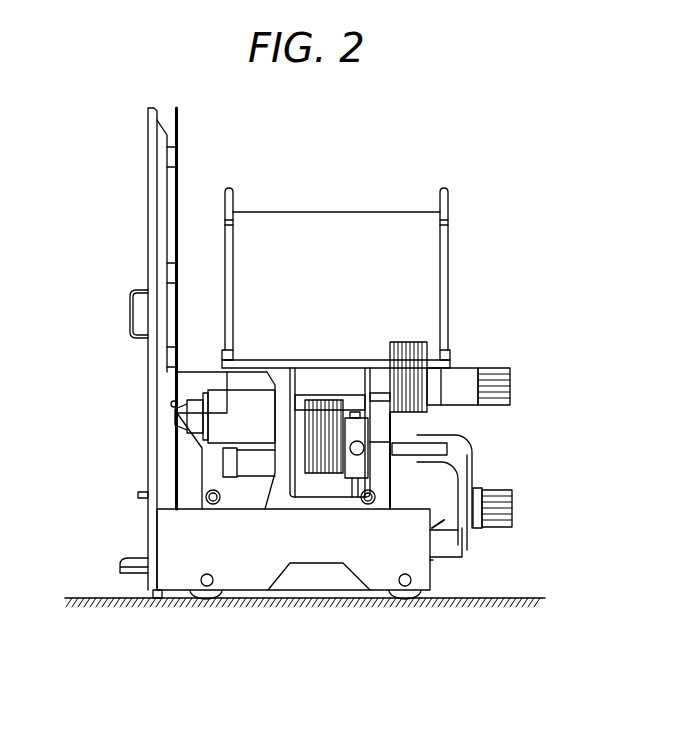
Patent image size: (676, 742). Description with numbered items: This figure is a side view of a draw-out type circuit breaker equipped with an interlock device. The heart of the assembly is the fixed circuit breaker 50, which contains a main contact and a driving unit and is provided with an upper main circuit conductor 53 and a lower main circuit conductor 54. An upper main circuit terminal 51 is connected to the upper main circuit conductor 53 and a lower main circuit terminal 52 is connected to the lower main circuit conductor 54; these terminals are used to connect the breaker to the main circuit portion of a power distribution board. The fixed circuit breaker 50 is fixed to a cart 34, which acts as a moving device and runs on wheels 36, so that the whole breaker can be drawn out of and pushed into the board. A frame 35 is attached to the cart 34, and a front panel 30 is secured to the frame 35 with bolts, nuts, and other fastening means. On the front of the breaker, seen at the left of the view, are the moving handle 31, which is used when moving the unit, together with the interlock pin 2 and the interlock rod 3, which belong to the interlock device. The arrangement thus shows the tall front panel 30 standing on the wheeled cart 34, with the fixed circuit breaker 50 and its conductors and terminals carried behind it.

The interlock pin 2 is at (138, 495).
The interlock rod 3 is at (153, 600).
The front panel 30 is at (148, 128).
The moving handle 31 is at (136, 292).
The cart 34 is at (262, 575).
The frame 35 is at (162, 445).
The wheels 36 is at (207, 600).
The fixed circuit breaker 50 is at (348, 222).
The upper main circuit terminal 51 is at (490, 378).
The lower main circuit terminal 52 is at (488, 495).
The upper main circuit conductor 53 is at (458, 372).
The lower main circuit conductor 54 is at (470, 450).